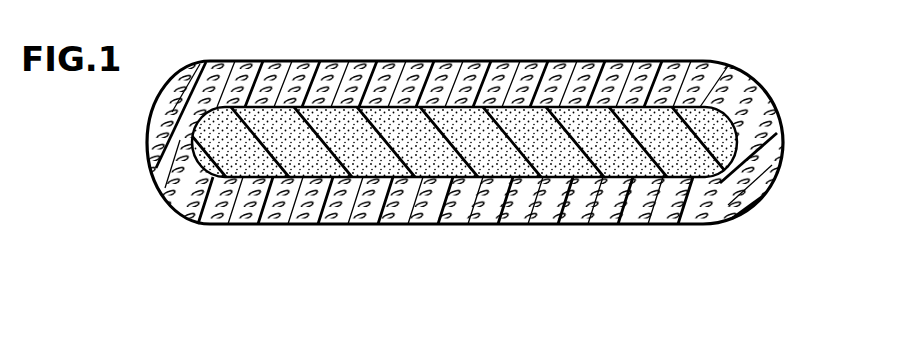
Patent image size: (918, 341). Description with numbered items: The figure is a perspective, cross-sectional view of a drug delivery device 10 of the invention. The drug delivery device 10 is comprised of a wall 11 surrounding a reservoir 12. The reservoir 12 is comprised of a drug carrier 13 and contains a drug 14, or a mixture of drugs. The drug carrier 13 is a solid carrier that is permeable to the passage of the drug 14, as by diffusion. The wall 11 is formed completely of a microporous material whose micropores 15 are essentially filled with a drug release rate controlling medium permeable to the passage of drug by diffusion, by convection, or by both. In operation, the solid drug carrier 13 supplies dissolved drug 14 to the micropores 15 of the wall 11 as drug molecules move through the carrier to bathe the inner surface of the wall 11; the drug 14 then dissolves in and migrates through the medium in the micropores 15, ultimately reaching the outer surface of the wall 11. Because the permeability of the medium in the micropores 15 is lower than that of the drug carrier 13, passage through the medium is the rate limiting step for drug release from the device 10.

The drug delivery device 10 is at (767, 90).
The wall 11 is at (767, 193).
The reservoir 12 is at (691, 180).
The drug carrier 13 is at (555, 178).
The drug 14 is at (232, 221).
The micropores 15 is at (197, 62).